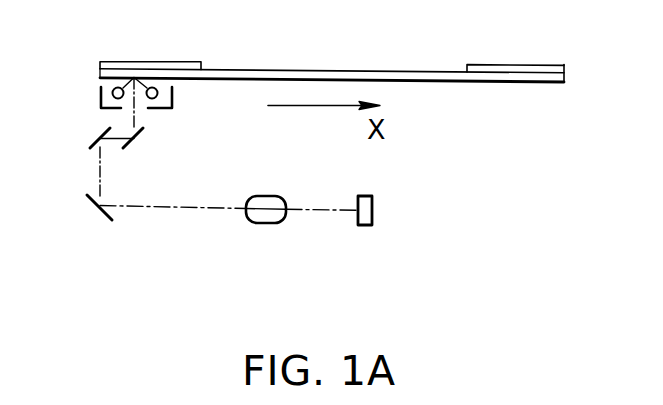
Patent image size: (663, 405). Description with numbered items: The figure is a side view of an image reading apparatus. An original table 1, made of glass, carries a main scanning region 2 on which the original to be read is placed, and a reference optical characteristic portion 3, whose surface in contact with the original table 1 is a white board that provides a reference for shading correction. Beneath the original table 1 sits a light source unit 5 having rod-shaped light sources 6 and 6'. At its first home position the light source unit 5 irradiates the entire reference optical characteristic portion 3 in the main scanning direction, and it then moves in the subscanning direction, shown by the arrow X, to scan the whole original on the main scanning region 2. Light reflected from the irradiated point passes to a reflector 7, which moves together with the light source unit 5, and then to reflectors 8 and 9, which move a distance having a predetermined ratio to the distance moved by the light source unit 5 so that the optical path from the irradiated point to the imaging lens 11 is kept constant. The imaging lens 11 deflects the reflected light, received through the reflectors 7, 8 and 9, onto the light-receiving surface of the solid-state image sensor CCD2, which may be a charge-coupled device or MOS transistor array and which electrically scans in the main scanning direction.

The original table 1 is at (452, 84).
The main scanning region 2 is at (337, 69).
The reference optical characteristic portion 3 is at (159, 61).
The light source unit 5 is at (157, 111).
The rod-shaped light source 6 is at (85, 99).
The rod-shaped light source 6' is at (186, 101).
The reflector 7 is at (142, 138).
The reflector 8 is at (97, 139).
The reflector 9 is at (104, 215).
The imaging lens 11 is at (262, 224).
The solid-state image sensor CCD2 is at (367, 226).